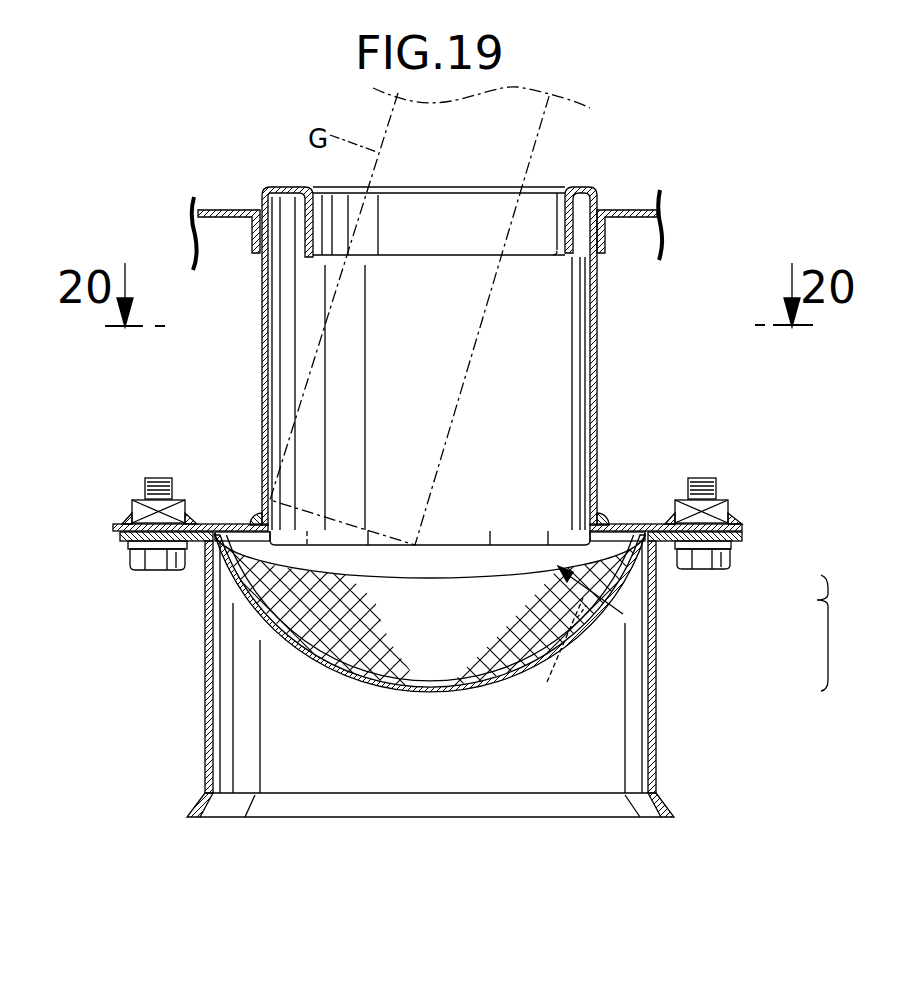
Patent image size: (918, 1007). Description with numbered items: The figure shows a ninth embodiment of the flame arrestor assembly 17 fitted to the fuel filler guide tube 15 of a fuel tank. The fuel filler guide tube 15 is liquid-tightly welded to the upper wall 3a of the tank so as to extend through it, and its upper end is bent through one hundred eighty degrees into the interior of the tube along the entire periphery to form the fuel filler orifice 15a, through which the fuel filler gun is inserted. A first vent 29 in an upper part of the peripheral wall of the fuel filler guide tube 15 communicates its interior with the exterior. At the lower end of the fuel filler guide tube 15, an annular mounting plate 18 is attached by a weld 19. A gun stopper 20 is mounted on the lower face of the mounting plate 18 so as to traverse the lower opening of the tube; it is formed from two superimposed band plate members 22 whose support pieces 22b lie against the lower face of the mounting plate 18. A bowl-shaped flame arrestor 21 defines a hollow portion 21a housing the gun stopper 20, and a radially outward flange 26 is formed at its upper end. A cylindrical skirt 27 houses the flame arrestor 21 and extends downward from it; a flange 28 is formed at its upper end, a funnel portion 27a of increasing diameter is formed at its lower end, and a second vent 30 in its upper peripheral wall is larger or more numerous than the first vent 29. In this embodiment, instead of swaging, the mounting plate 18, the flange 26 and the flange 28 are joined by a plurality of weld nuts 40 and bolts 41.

The fuel filler guide tube 15 is at (598, 386).
The fuel filler orifice 15a is at (562, 228).
The upper wall 3a is at (633, 208).
The first vent 29 is at (594, 282).
The weld 19 is at (610, 515).
The band plate member 22 is at (457, 542).
The support piece 22b is at (240, 524).
The flange 26 is at (113, 528).
The flange 28 is at (120, 538).
The mounting plate 18 is at (742, 536).
The weld nut 40 is at (143, 508).
The bolt 41 is at (157, 560).
The gun stopper 20 is at (627, 603).
The flame arrestor 21 is at (620, 660).
The hollow portion 21a is at (447, 623).
The second vent 30 is at (552, 670).
The skirt 27 is at (660, 715).
The funnel portion 27a is at (672, 803).
The flame arrestor assembly 17 is at (840, 633).